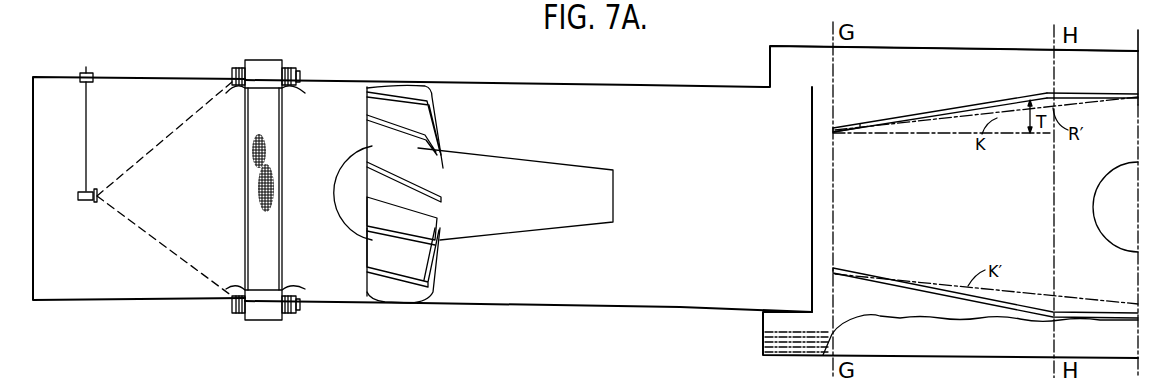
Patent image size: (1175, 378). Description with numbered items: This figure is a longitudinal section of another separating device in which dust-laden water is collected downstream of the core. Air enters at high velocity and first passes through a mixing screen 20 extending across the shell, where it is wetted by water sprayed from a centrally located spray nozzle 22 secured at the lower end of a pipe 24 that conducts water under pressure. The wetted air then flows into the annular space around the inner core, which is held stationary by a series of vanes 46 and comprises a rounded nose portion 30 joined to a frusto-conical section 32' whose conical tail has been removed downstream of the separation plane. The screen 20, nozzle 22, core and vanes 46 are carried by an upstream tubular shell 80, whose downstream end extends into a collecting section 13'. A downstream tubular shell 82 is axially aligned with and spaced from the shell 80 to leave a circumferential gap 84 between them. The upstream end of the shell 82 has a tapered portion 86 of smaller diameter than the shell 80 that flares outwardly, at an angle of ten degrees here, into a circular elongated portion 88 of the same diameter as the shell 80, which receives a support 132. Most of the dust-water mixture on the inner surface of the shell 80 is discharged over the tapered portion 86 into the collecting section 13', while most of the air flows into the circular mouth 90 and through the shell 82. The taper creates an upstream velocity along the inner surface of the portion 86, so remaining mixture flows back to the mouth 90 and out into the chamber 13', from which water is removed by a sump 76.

The collecting section 13' is at (955, 36).
The mixing screen 20 is at (257, 115).
The spray nozzle 22 is at (100, 198).
The pipe 24 is at (90, 71).
The nose portion 30 is at (333, 208).
The frusto-conical section 32' is at (515, 184).
The vanes 46 is at (437, 150).
The sump 76 is at (973, 345).
The upstream tubular shell 80 is at (670, 100).
The downstream tubular shell 82 is at (1112, 300).
The circumferential gap 84 is at (822, 136).
The tapered portion 86 is at (922, 113).
The circular elongated portion 88 is at (1092, 97).
The circular mouth 90 is at (833, 271).
The support 132 is at (1110, 227).